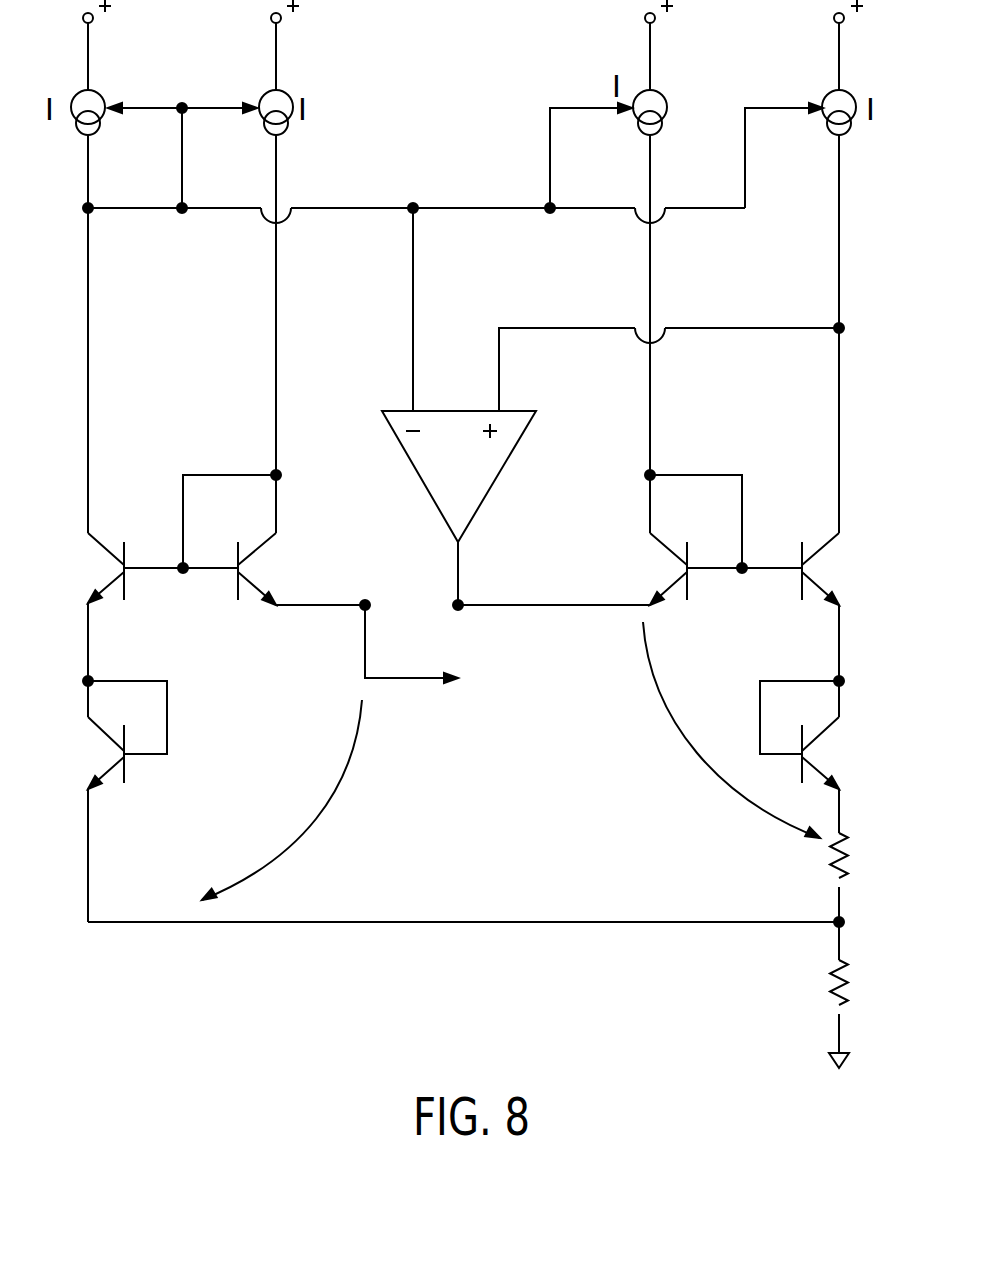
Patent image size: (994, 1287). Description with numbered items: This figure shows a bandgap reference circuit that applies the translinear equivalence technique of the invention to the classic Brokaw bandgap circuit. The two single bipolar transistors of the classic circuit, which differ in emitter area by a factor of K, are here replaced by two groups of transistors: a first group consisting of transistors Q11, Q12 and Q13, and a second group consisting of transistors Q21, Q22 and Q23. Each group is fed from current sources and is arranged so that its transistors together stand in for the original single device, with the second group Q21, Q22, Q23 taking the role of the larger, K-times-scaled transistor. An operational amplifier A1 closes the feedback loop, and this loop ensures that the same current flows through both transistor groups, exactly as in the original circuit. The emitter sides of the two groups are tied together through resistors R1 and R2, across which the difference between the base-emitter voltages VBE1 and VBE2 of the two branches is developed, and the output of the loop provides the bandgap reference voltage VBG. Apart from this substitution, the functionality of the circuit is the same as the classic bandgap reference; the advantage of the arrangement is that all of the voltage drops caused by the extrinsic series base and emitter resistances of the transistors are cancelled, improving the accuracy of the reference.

The operational amplifier A1 is at (613, 406).
The transistor Q11 is at (98, 799).
The transistor Q12 is at (134, 625).
The transistor Q13 is at (274, 541).
The transistor Q21 is at (831, 757).
The transistor Q22 is at (852, 623).
The transistor Q23 is at (630, 541).
The resistor R1 is at (863, 896).
The resistor R2 is at (863, 1014).
The bandgap output voltage VBG is at (441, 651).
The base-emitter voltage of first stack VBE1 is at (289, 800).
The base-emitter voltage of second stack VBE2 is at (719, 730).